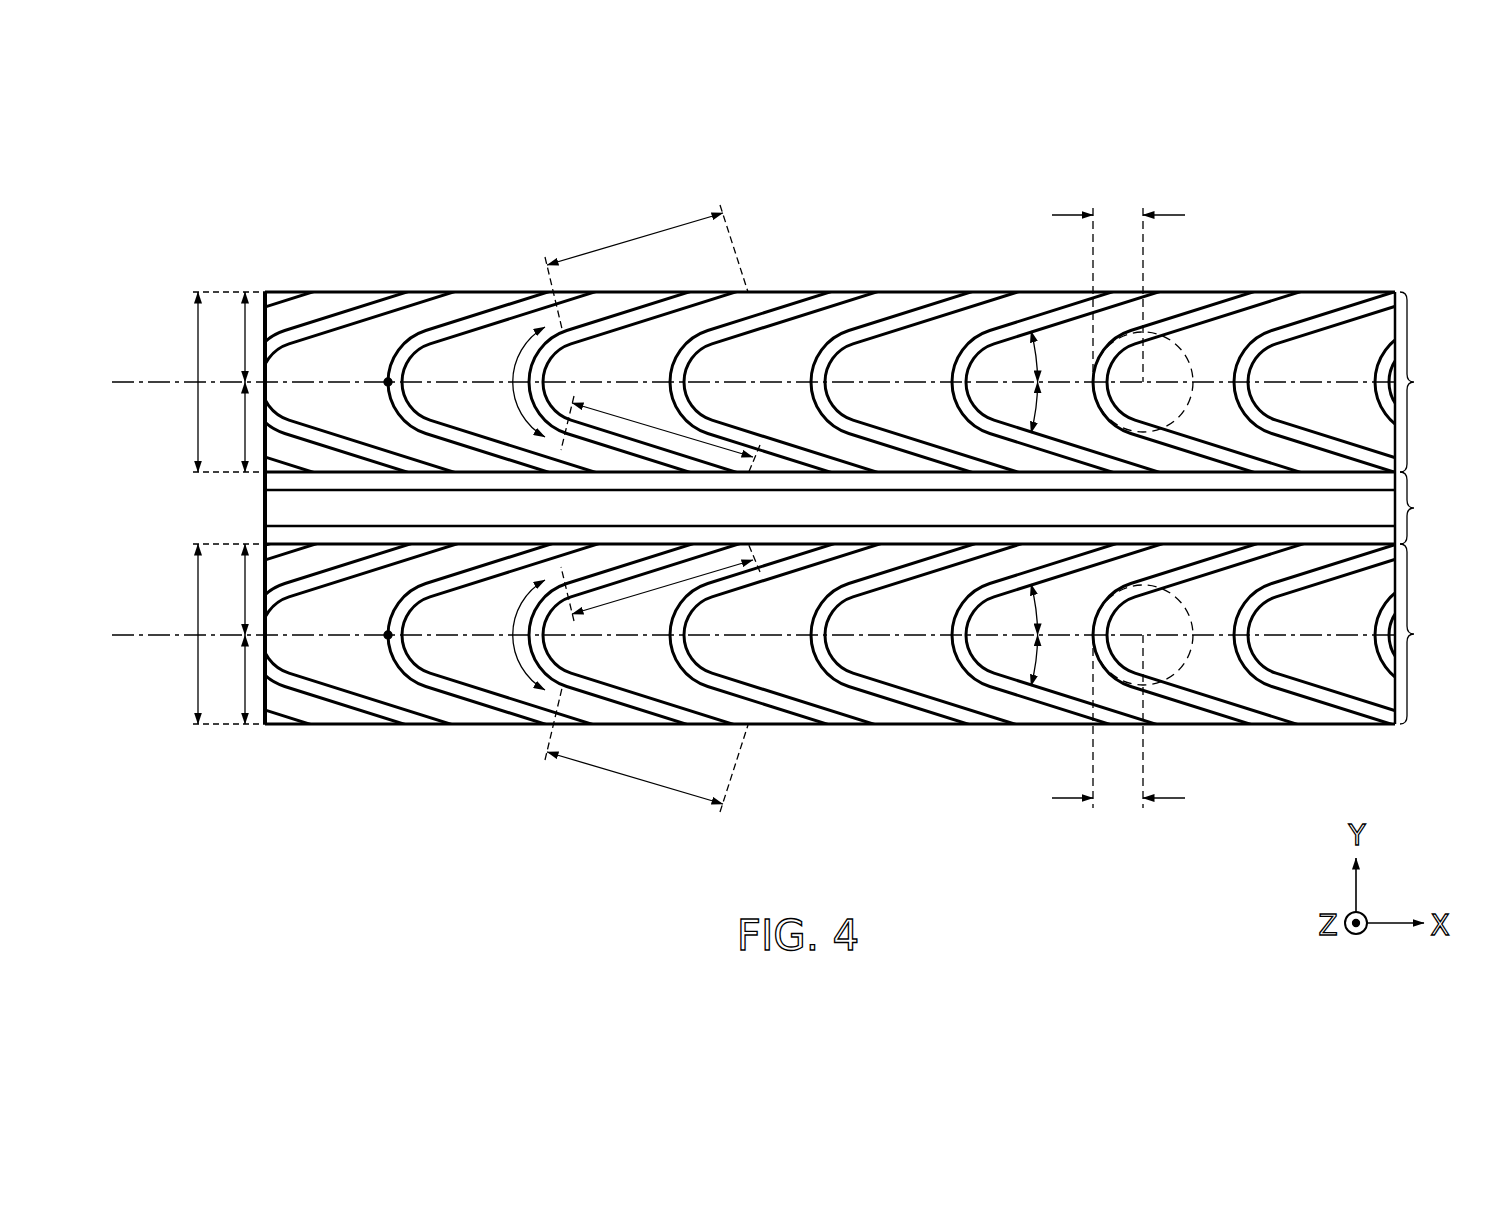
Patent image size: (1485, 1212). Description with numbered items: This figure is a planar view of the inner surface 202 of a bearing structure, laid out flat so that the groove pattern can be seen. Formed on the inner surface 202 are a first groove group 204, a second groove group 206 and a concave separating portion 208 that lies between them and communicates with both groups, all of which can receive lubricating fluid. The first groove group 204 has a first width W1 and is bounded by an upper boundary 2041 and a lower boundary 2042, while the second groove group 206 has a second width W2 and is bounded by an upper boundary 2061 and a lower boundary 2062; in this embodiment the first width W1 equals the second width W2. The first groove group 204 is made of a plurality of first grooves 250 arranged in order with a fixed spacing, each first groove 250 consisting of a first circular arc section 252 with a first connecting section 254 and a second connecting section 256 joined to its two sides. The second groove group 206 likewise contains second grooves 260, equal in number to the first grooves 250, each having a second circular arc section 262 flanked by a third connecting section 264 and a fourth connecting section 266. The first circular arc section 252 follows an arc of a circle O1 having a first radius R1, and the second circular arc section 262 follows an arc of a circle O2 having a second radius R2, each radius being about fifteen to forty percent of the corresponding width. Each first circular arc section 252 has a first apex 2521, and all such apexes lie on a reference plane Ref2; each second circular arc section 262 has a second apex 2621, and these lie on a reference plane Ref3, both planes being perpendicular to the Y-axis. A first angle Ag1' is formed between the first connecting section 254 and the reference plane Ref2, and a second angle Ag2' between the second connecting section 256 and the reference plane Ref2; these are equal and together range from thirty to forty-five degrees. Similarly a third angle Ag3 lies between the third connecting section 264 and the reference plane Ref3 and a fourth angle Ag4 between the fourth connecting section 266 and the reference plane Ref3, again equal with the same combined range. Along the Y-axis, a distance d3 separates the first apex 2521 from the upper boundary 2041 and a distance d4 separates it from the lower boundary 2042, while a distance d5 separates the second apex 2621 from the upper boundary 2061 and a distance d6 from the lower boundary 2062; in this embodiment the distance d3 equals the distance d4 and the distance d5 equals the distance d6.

The inner surface 202 is at (166, 222).
The first groove group 204 is at (868, 508).
The second groove group 206 is at (1436, 634).
The separating portion 208 is at (868, 508).
The upper boundary 2041 is at (338, 292).
The lower boundary 2042 is at (353, 473).
The upper boundary 2061 is at (353, 543).
The lower boundary 2062 is at (330, 725).
The first grooves 250 is at (506, 300).
The first circular arc section 252 is at (502, 382).
The first apex 2521 is at (388, 382).
The first connecting section 254 is at (1000, 336).
The second connecting section 256 is at (1210, 505).
The second grooves 260 is at (509, 716).
The second circular arc section 262 is at (502, 635).
The second apex 2621 is at (388, 636).
The third connecting section 264 is at (963, 556).
The fourth connecting section 266 is at (1000, 680).
The first angle Ag1' is at (1035, 310).
The second angle Ag2' is at (1035, 454).
The third angle Ag3 is at (1048, 600).
The fourth angle Ag4 is at (1040, 688).
The first radius R1 is at (1118, 280).
The second radius R2 is at (1118, 738).
The circle O1 is at (1168, 338).
The circle O2 is at (1168, 680).
The reference plane Ref2 is at (130, 380).
The reference plane Ref3 is at (130, 632).
The first width W1 is at (205, 382).
The second width W2 is at (205, 634).
The distance d3 is at (225, 337).
The distance d4 is at (225, 427).
The distance d5 is at (225, 589).
The distance d6 is at (225, 679).